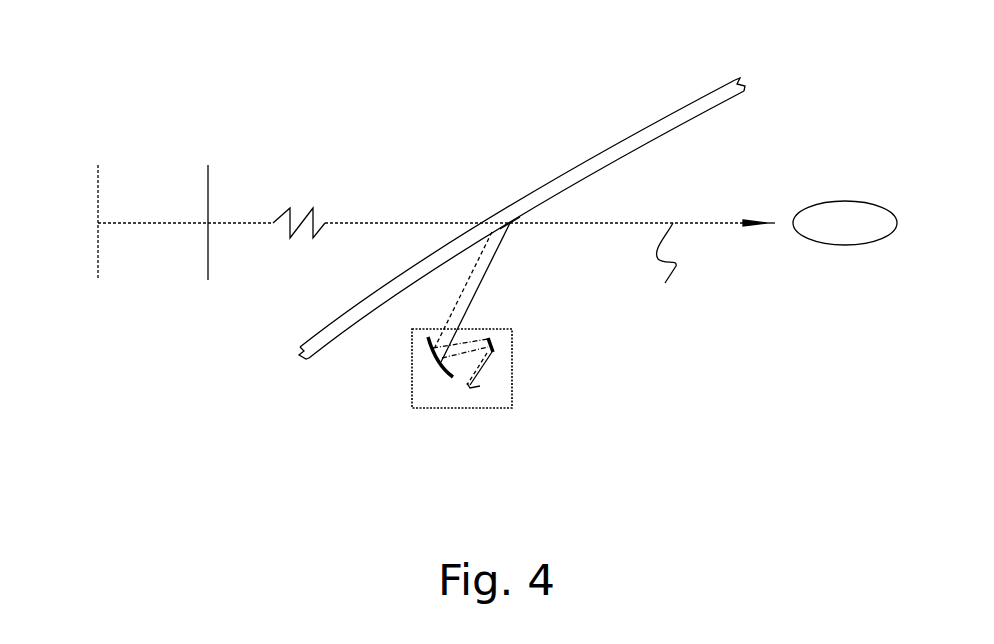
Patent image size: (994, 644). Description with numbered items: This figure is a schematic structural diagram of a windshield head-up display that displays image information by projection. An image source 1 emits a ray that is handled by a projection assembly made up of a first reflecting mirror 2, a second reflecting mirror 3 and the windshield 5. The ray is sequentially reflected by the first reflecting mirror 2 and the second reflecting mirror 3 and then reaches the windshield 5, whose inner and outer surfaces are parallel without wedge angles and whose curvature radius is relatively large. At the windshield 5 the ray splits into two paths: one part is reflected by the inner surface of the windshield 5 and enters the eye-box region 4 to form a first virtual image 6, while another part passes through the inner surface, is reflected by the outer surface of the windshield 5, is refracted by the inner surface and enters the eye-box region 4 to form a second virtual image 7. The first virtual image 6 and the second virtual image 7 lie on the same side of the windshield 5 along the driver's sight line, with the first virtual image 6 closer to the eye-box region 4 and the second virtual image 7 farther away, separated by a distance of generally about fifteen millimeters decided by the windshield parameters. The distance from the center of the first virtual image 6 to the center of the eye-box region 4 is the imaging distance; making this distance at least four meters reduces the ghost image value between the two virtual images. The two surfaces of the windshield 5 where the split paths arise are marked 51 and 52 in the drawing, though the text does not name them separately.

The image source 1 is at (478, 387).
The first reflecting mirror 2 is at (495, 345).
The second reflecting mirror 3 is at (428, 337).
The eye-box region 4 is at (833, 208).
The windshield 5 is at (522, 187).
The first surface 51 is at (497, 232).
The second surface 52 is at (510, 223).
The first virtual image 6 is at (208, 165).
The second virtual image 7 is at (98, 165).